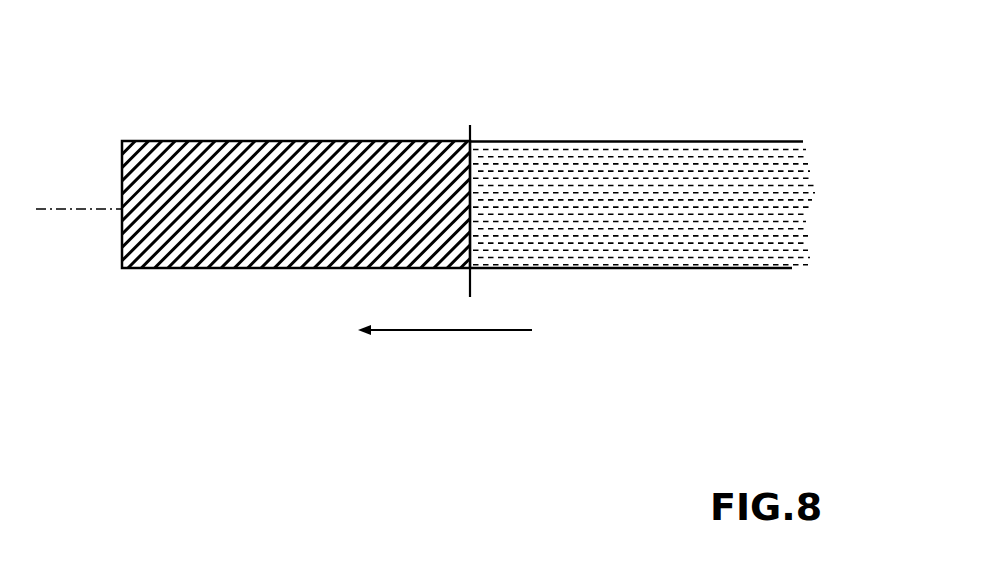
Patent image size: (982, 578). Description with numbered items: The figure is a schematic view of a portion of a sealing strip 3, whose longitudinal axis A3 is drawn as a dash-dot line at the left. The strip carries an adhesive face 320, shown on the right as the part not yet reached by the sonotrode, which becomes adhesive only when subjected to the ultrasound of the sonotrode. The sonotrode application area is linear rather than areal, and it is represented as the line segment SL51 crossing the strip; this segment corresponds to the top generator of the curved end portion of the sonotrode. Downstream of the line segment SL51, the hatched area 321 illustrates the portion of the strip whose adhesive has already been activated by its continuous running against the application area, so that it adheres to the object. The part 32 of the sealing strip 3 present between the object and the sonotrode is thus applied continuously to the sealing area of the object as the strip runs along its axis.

The sealing strip 3 is at (407, 198).
The part of sealing strip 32 is at (407, 211).
The adhesive face 320 is at (687, 247).
The hatched area 321 is at (292, 240).
The line segment SL51 is at (470, 126).
The longitudinal axis A3 is at (83, 211).